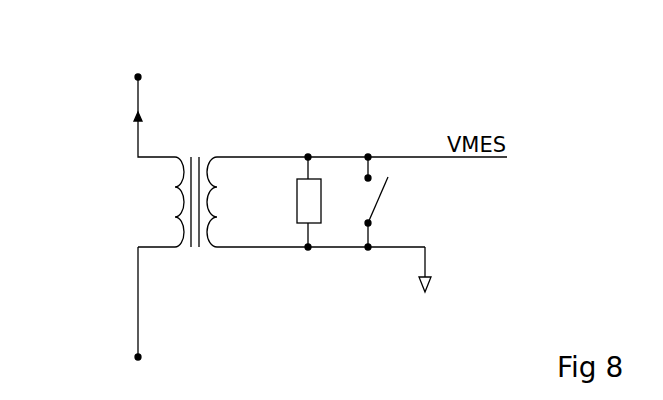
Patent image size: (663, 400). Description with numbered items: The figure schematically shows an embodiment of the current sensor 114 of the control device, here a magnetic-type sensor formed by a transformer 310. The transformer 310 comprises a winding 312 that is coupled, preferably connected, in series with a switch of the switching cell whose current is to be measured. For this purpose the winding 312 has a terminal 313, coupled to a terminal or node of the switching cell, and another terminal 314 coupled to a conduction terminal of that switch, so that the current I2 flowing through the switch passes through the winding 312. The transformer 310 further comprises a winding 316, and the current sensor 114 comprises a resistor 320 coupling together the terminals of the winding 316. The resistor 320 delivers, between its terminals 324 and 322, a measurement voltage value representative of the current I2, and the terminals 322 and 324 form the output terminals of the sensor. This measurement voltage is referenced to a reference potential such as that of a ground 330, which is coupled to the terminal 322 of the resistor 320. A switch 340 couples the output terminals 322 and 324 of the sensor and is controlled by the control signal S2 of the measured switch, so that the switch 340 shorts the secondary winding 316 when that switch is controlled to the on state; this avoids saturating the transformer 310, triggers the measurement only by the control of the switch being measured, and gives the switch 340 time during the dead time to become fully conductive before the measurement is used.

The current sensor 114 is at (97, 84).
The terminal 314 is at (139, 77).
The current I2 is at (127, 121).
The transformer 310 is at (230, 195).
The winding 312 is at (160, 247).
The winding 316 is at (210, 247).
The terminal 324 is at (311, 154).
The resistor 320 is at (313, 203).
The terminal 322 is at (308, 249).
The switch 340 is at (417, 161).
The control signal S2 is at (399, 203).
The ground 330 is at (432, 285).
The terminal 313 is at (136, 357).